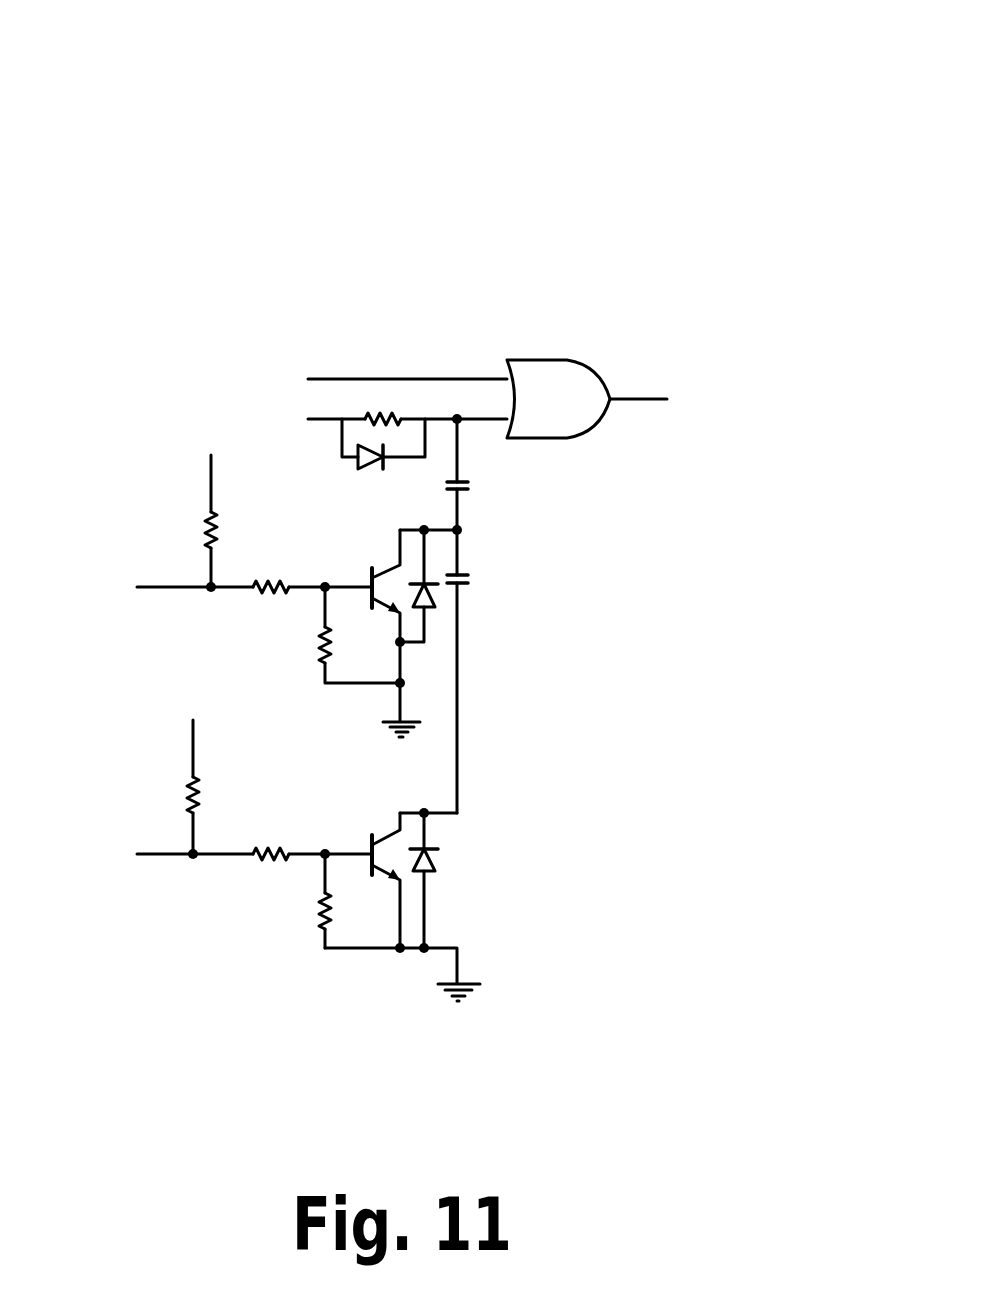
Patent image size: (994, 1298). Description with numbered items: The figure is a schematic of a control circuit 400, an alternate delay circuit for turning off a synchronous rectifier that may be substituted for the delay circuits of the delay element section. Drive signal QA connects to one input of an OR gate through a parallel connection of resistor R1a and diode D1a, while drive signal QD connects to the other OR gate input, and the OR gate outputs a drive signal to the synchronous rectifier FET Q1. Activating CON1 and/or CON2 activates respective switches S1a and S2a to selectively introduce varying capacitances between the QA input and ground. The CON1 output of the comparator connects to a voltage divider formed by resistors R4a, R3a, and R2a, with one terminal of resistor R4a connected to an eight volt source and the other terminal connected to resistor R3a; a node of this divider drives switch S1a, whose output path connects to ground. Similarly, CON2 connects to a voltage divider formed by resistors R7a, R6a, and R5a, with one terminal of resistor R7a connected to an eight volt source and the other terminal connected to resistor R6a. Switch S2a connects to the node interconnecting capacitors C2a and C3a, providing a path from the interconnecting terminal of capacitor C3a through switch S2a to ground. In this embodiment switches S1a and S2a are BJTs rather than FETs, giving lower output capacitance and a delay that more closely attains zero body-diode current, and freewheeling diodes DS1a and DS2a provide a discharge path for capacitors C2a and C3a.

The control circuit 400 is at (677, 70).
The drive signal QD is at (384, 383).
The drive signal QA is at (313, 423).
The synchronous rectifier FET Q1 is at (606, 399).
The resistor R1a is at (436, 408).
The diode D1a is at (383, 456).
The capacitor C3a is at (489, 472).
The capacitor C2a is at (491, 669).
The switch S2a is at (391, 633).
The freewheeling diode DS2a is at (428, 606).
The resistor R5a is at (362, 635).
The resistor R6a is at (268, 573).
The resistor R7a is at (191, 511).
The control signal CON2 is at (144, 586).
The switch S1a is at (402, 901).
The freewheeling diode DS1a is at (443, 856).
The resistor R2a is at (346, 898).
The resistor R3a is at (259, 842).
The resistor R4a is at (169, 776).
The comparator output CON1 is at (135, 853).